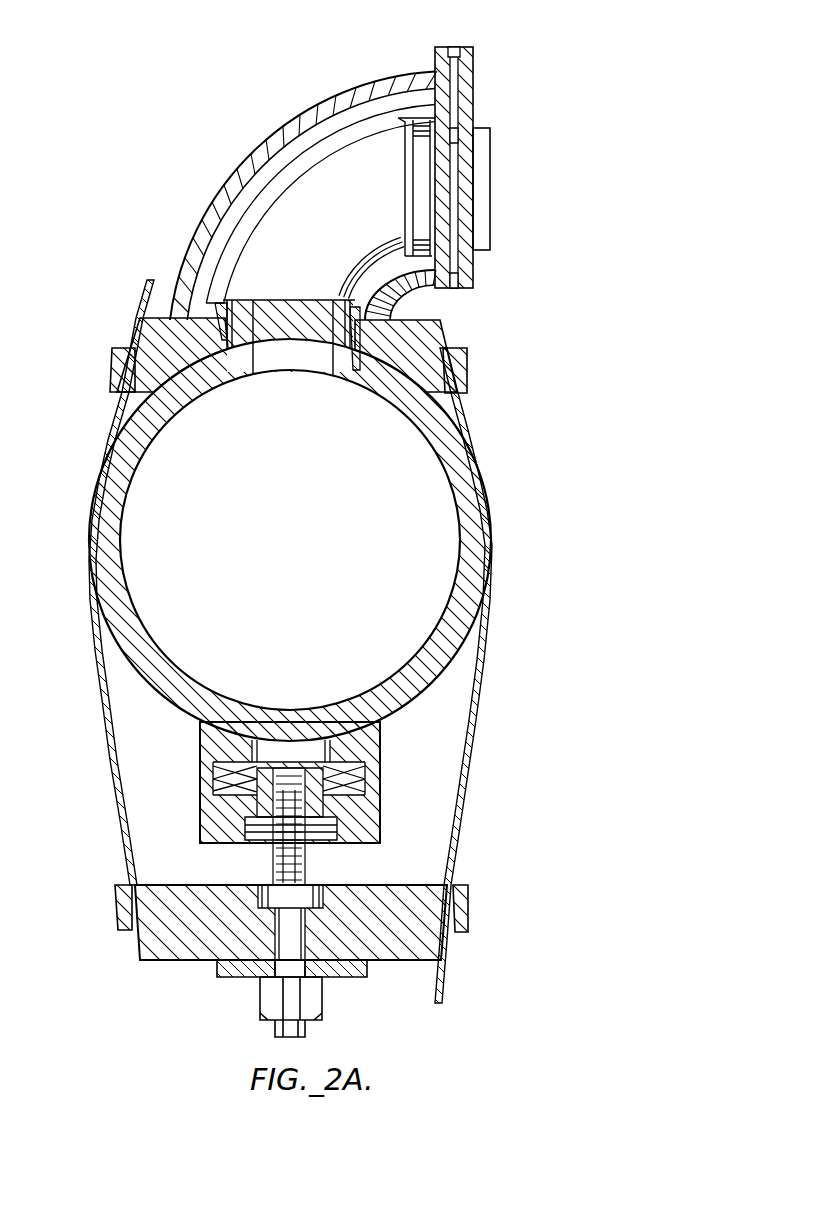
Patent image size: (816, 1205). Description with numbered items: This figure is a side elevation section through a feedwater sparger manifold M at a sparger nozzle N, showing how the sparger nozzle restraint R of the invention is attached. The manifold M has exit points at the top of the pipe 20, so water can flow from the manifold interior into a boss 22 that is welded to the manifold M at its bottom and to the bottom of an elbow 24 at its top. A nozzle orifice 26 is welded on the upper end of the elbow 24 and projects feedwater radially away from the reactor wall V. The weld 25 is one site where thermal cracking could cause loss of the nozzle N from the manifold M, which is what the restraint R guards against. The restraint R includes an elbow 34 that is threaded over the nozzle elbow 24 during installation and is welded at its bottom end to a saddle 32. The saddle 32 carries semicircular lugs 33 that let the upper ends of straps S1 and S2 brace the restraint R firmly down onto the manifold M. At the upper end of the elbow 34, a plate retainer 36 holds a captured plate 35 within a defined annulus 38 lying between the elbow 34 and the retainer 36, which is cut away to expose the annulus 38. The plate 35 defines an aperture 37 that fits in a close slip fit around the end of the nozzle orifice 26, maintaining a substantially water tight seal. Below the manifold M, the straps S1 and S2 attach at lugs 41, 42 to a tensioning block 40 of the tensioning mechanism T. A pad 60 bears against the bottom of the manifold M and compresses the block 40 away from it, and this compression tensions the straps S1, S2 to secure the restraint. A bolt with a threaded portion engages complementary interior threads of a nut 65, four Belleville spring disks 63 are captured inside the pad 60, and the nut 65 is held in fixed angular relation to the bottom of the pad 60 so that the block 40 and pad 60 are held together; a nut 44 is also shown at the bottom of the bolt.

The pipe 20 is at (262, 368).
The boss 22 is at (370, 342).
The elbow 24 is at (368, 122).
The weld 25 is at (215, 305).
The nozzle orifice 26 is at (491, 130).
The saddle 32 is at (148, 337).
The lugs 33 is at (110, 368).
The elbow 34 is at (205, 215).
The plate 35 is at (462, 100).
The plate retainer 36 is at (474, 55).
The aperture 37 is at (458, 140).
The annulus 38 is at (451, 47).
The tensioning block 40 is at (384, 933).
The lug 41 is at (115, 906).
The lug 42 is at (470, 910).
The nut 44 is at (322, 1012).
The pad 60 is at (381, 742).
The Belleville spring disks 63 is at (365, 778).
The nut 65 is at (352, 830).
The restraint R is at (312, 104).
The nozzle N is at (250, 178).
The manifold M is at (122, 525).
The wall V is at (52, 484).
The strap S1 is at (93, 640).
The strap S2 is at (482, 655).
The tensioning mechanism T is at (172, 963).